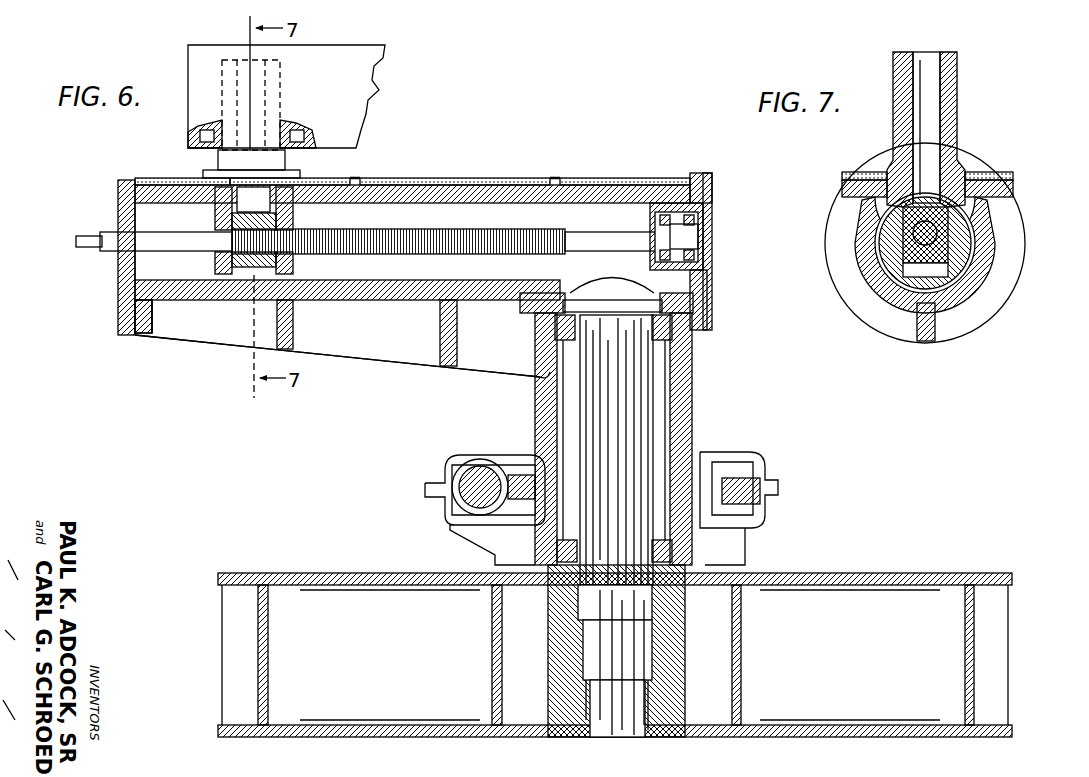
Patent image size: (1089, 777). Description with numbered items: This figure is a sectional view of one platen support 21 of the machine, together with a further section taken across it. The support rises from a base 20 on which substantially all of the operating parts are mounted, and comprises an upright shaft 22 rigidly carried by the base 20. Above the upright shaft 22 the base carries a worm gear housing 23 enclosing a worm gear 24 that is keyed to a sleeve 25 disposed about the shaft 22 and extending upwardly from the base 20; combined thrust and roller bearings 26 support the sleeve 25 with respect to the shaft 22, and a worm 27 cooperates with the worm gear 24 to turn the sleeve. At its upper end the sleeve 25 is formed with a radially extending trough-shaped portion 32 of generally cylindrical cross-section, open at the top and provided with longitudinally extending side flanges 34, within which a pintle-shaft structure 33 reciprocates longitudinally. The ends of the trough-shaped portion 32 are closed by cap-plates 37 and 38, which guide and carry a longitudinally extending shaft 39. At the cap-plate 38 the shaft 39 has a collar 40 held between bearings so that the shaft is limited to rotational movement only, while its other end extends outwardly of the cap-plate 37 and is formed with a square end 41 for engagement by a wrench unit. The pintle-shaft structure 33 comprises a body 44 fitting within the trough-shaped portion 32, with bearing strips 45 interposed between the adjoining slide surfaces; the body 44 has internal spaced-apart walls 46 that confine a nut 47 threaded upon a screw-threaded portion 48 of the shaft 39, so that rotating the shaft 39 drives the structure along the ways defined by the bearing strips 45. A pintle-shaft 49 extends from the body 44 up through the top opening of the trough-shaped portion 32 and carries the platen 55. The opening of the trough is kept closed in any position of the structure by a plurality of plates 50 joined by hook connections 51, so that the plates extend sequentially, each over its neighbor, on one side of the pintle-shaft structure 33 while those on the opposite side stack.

In FIG. 6, the base 20 is at (288, 572).
In FIG. 6, the platen support 21 is at (694, 410).
In FIG. 6, the upright shaft 22 is at (636, 398).
In FIG. 6, the worm gear housing 23 is at (758, 457).
In FIG. 6, the worm gear 24 is at (736, 478).
In FIG. 6, the sleeve 25 is at (690, 338).
In FIG. 6, the combined thrust and roller bearings 26 is at (696, 310).
In FIG. 6, the worm 27 is at (480, 466).
In FIG. 6, the trough-shaped portion 32 is at (372, 300).
In FIG. 7, the trough-shaped portion 32 is at (990, 278).
In FIG. 6, the pintle-shaft structure 33 is at (208, 163).
In FIG. 7, the pintle-shaft structure 33 is at (960, 135).
In FIG. 7, the side flanges 34 is at (1014, 188).
In FIG. 6, the cap-plate 37 is at (120, 300).
In FIG. 6, the cap-plate 38 is at (709, 292).
In FIG. 6, the shaft 39 is at (578, 235).
In FIG. 6, the collar 40 is at (706, 197).
In FIG. 6, the square end 41 is at (90, 235).
In FIG. 6, the body 44 is at (322, 190).
In FIG. 7, the bearing strips 45 is at (988, 200).
In FIG. 6, the internal spaced-apart walls 46 is at (222, 214).
In FIG. 6, the nut 47 is at (245, 268).
In FIG. 7, the nut 47 is at (942, 242).
In FIG. 6, the screw-threaded portion 48 is at (468, 240).
In FIG. 7, the screw-threaded portion 48 is at (907, 248).
In FIG. 6, the pintle-shaft 49 is at (276, 96).
In FIG. 7, the pintle-shaft 49 is at (958, 98).
In FIG. 6, the plates 50 is at (140, 180).
In FIG. 7, the plates 50 is at (985, 174).
In FIG. 6, the hook connections 51 is at (380, 180).
In FIG. 6, the platen 55 is at (371, 82).